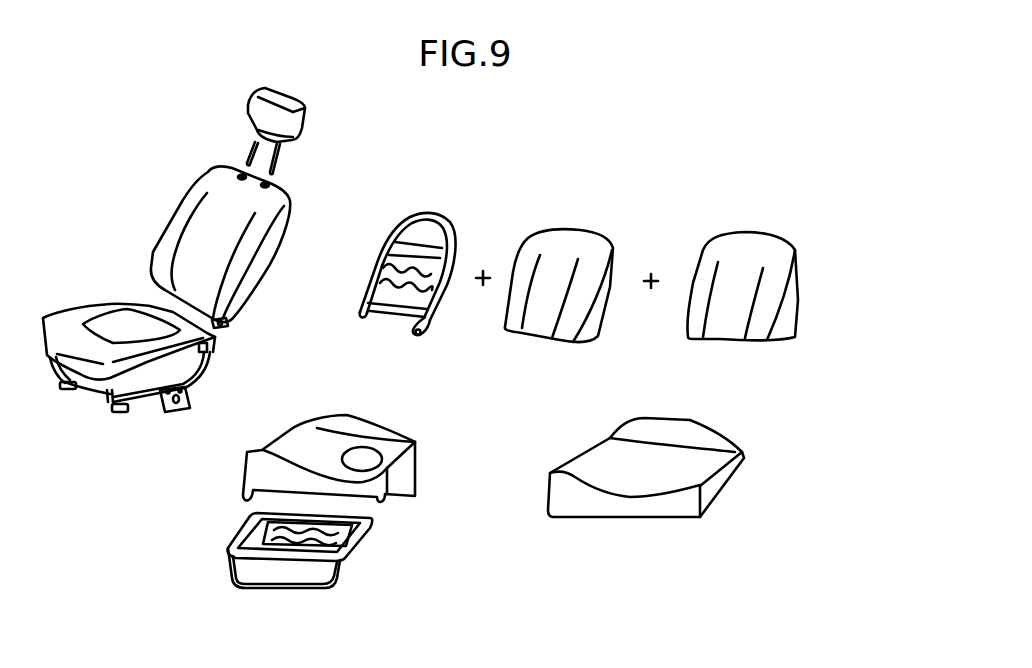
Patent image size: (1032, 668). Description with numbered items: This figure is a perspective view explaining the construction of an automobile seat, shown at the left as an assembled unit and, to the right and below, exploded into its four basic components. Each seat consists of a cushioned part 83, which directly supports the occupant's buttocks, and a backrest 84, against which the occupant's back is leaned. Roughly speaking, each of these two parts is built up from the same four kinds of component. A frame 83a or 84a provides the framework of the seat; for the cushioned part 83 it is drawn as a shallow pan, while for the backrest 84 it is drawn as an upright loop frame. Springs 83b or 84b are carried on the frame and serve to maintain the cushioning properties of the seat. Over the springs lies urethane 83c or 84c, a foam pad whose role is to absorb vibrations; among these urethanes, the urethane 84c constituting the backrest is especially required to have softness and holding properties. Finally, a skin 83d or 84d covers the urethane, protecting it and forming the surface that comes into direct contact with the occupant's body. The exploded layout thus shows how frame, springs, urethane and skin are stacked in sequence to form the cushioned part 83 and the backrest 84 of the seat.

The cushioned part 83 is at (84, 313).
The frame 83a is at (262, 566).
The springs 83b is at (250, 523).
The urethane 83c is at (370, 430).
The skin 83d is at (717, 438).
The backrest 84 is at (183, 208).
The frame 84a is at (406, 257).
The springs 84b is at (383, 258).
The urethane 84c is at (565, 240).
The skin 84d is at (793, 315).